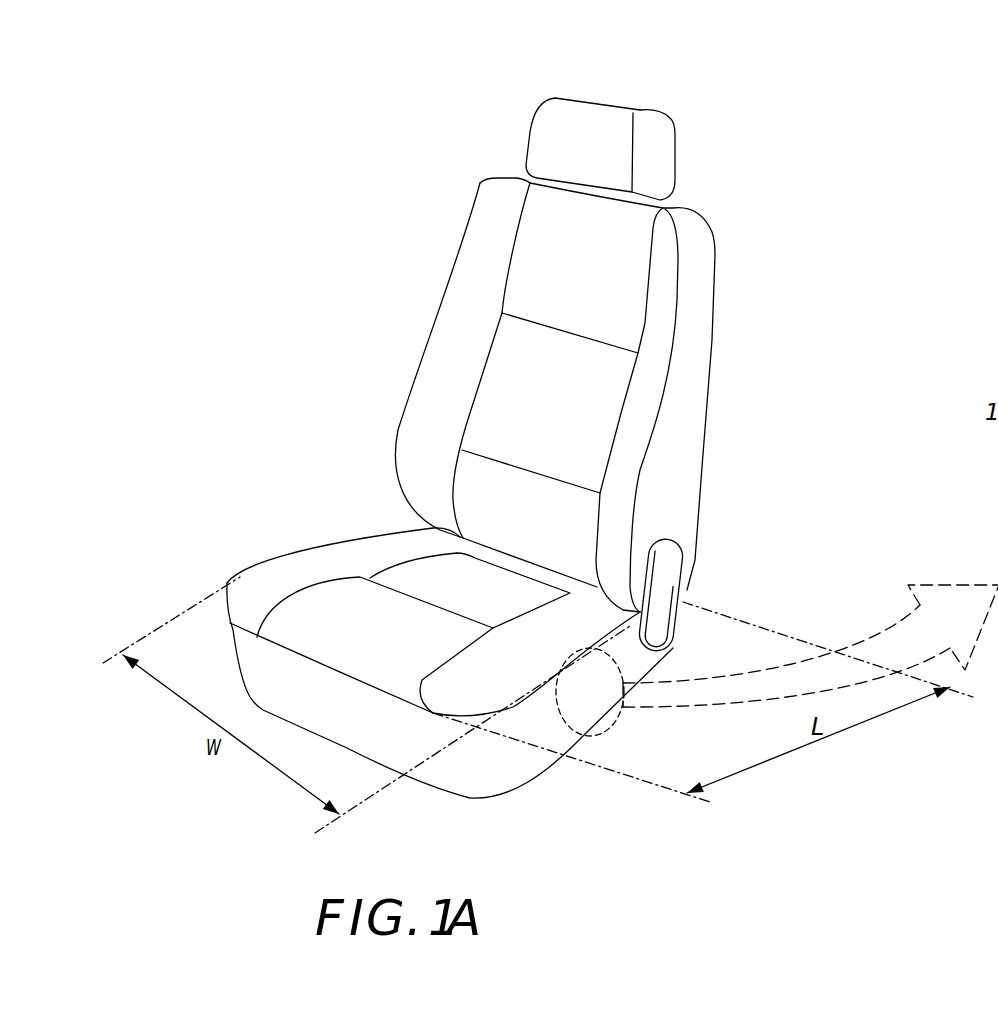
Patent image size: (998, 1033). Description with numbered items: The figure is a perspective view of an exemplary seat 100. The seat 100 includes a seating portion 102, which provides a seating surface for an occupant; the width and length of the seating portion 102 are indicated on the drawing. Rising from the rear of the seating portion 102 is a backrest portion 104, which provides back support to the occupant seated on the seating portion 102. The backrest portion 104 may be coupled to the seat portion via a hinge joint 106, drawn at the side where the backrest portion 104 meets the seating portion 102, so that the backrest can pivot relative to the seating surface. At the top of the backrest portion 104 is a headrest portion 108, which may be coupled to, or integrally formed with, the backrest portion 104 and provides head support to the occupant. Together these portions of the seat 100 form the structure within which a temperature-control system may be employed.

The seat 100 is at (723, 118).
The seating portion 102 is at (317, 552).
The backrest portion 104 is at (456, 357).
The hinge joint 106 is at (657, 597).
The headrest portion 108 is at (572, 141).